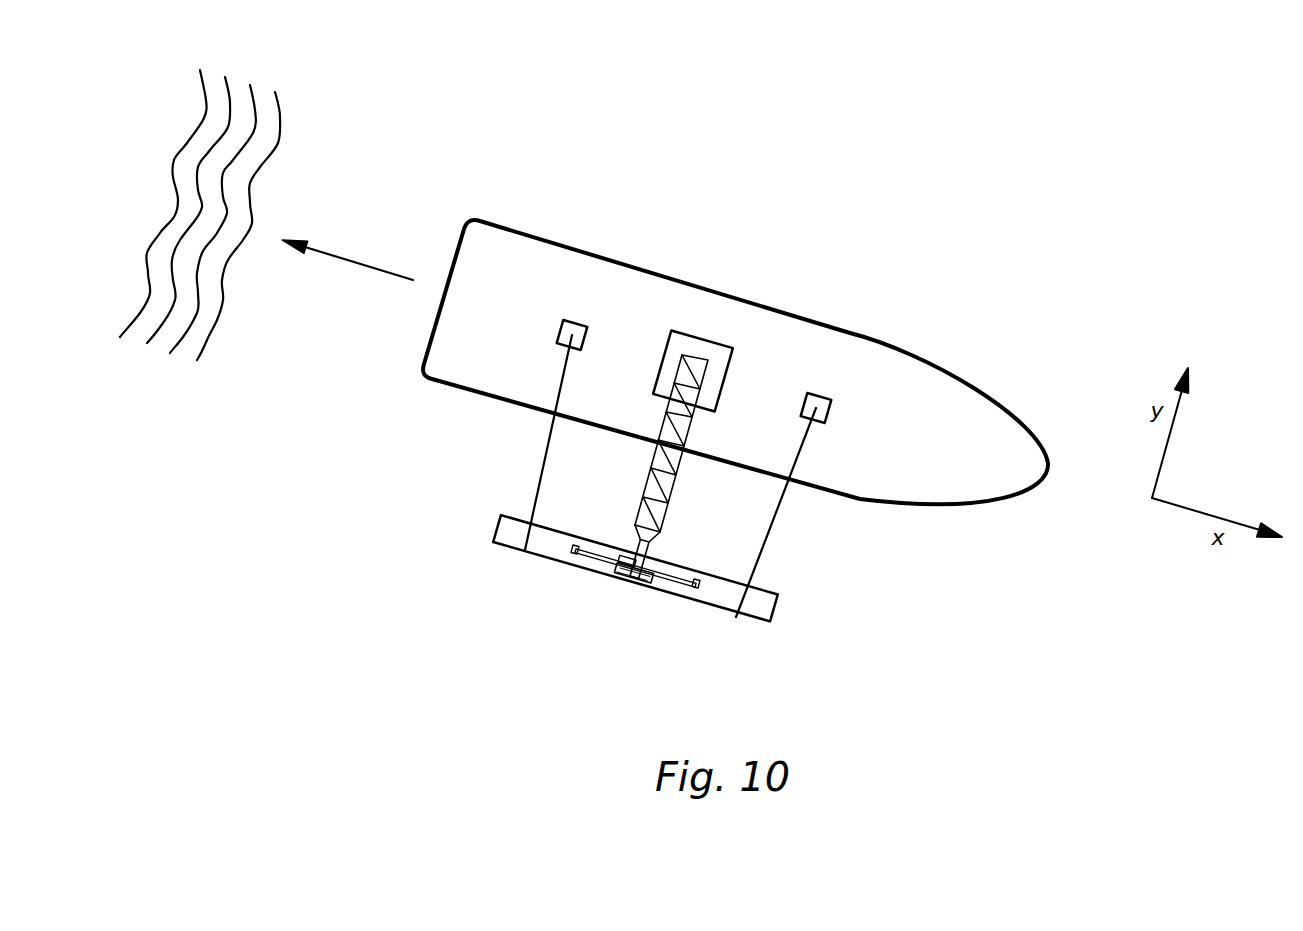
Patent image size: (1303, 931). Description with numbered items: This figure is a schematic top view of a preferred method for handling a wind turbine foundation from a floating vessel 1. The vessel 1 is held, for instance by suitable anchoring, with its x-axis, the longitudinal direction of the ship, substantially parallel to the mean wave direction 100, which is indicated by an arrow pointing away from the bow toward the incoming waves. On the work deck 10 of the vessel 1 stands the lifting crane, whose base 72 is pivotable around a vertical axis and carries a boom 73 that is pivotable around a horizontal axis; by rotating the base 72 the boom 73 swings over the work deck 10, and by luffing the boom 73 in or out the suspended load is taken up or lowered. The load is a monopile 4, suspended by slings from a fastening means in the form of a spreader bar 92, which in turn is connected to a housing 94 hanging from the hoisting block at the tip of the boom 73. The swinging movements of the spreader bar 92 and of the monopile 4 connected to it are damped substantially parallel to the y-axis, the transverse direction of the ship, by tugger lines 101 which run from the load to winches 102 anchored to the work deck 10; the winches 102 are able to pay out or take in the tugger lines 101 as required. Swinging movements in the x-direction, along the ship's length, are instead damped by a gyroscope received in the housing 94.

The vessel 1 is at (918, 325).
The work deck 10 is at (521, 278).
The mean wave direction 100 is at (358, 262).
The tugger lines 101 is at (546, 447).
The winches 102 is at (558, 333).
The base 72 is at (703, 348).
The boom 73 is at (649, 483).
The monopile 4 is at (757, 608).
The spreader bar 92 is at (592, 555).
The housing 94 is at (643, 578).